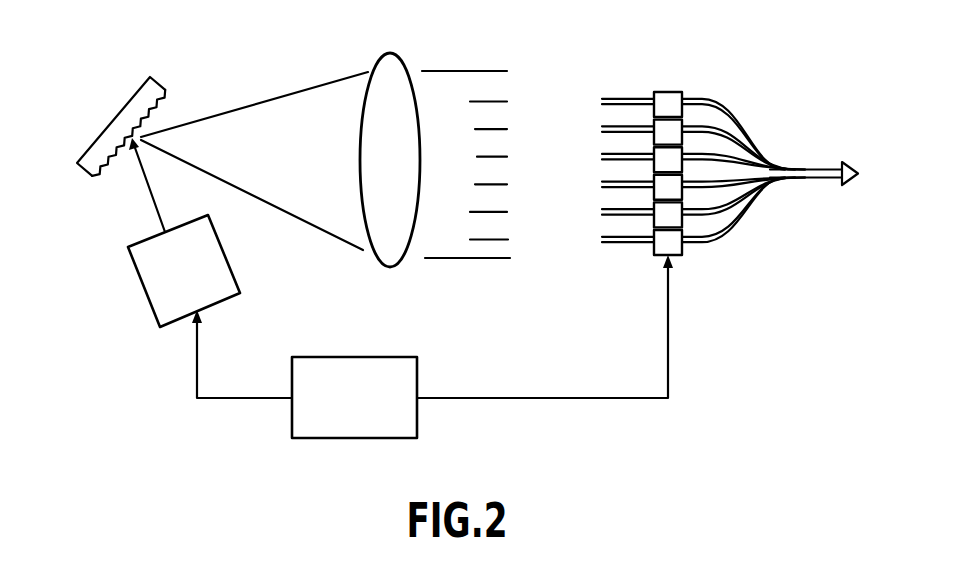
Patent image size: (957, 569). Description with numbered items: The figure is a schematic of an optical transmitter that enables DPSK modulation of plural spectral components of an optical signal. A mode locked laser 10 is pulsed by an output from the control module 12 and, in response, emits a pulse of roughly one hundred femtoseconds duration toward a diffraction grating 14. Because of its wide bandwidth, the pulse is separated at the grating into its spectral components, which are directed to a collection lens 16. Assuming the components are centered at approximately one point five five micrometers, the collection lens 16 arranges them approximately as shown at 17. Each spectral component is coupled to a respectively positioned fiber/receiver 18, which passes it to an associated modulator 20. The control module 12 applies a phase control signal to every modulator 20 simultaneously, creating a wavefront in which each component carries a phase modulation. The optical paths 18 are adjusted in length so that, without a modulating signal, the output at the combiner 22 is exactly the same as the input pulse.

The mode locked laser 10 is at (143, 290).
The control module 12 is at (375, 356).
The diffraction grating 14 is at (157, 83).
The collection lens 16 is at (390, 63).
The arrangement of spectral components 17 is at (512, 78).
The fiber/receiver 18 is at (623, 98).
The modulator 20 is at (672, 92).
The combiner 22 is at (803, 166).